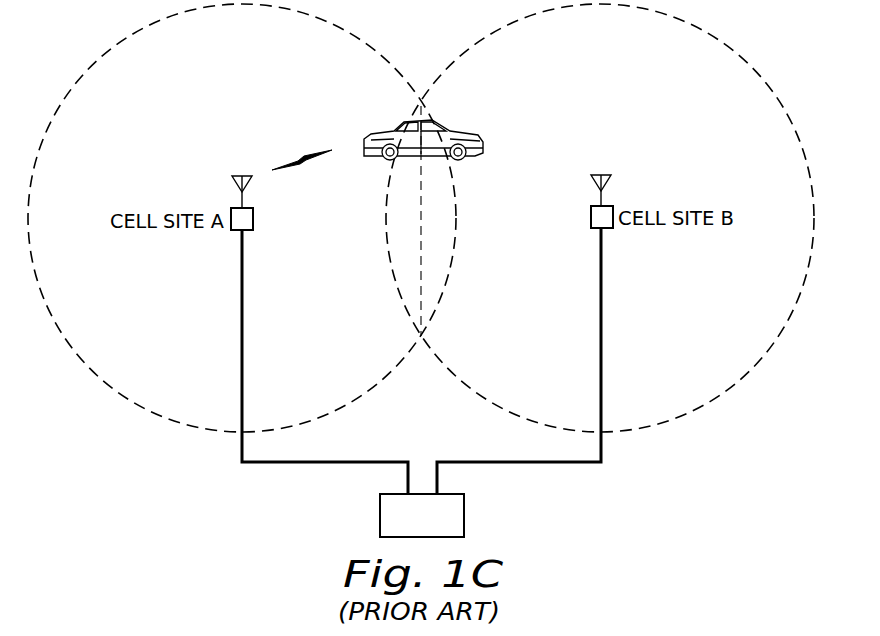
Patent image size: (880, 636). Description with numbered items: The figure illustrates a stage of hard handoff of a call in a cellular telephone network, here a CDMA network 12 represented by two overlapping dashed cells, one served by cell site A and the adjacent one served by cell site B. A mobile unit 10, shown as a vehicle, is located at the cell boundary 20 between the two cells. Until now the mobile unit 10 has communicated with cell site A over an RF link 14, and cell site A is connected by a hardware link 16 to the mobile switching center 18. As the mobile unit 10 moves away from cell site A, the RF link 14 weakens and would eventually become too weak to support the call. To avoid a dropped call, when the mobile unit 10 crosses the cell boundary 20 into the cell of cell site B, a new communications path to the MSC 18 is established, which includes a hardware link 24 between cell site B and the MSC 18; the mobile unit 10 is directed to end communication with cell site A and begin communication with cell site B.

The mobile unit 10 is at (463, 131).
The CDMA network 12 is at (77, 47).
The RF link 14 is at (313, 153).
The hardware link 16 is at (242, 333).
The mobile switching center 18 is at (466, 513).
The cell boundary 20 is at (420, 283).
The hardware link 24 is at (603, 326).